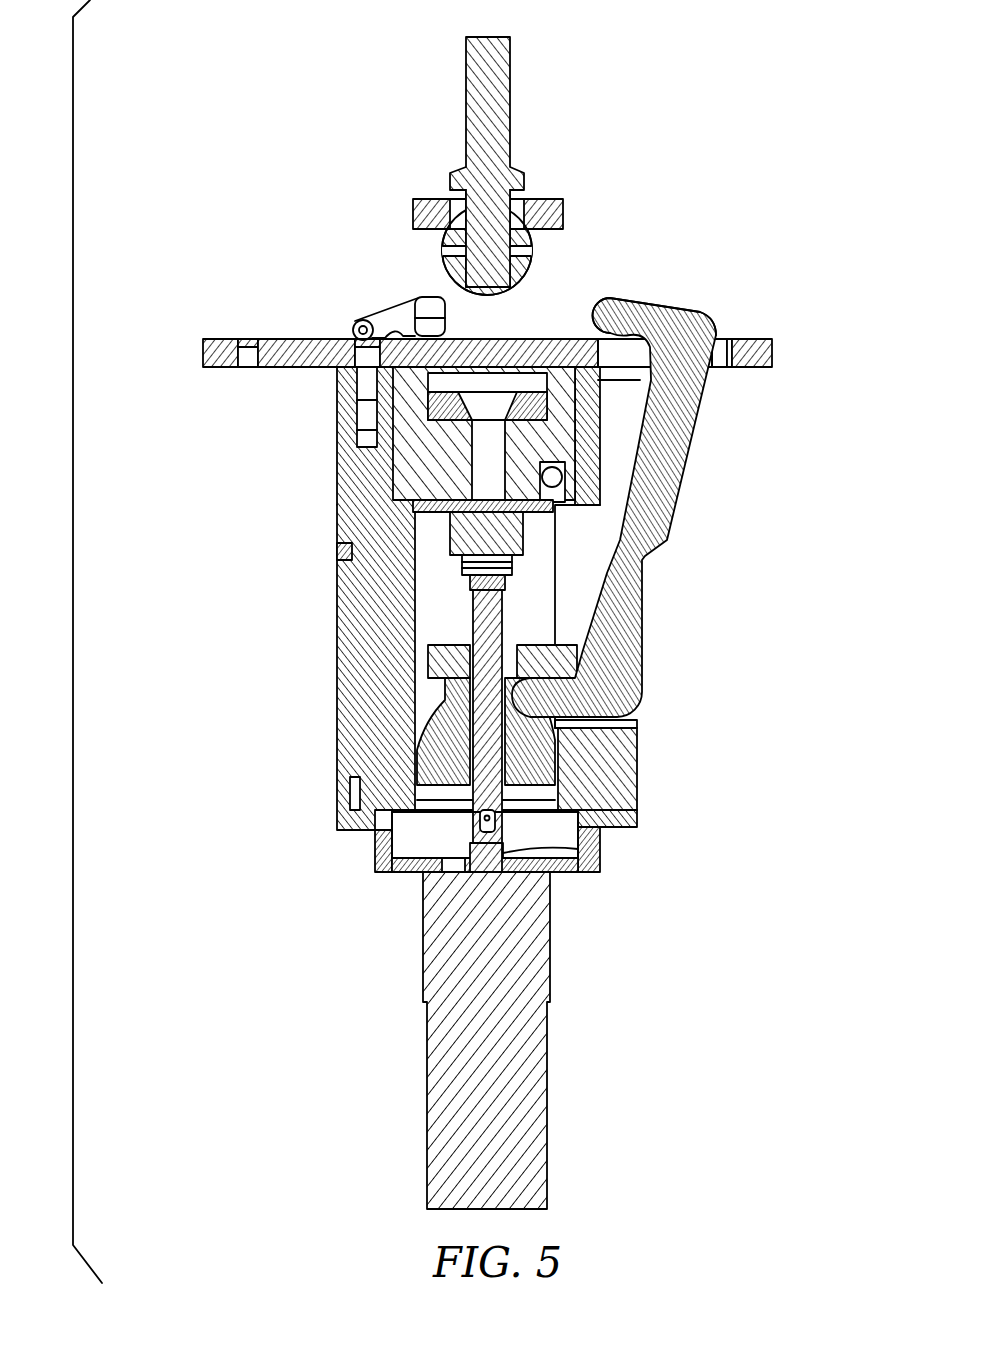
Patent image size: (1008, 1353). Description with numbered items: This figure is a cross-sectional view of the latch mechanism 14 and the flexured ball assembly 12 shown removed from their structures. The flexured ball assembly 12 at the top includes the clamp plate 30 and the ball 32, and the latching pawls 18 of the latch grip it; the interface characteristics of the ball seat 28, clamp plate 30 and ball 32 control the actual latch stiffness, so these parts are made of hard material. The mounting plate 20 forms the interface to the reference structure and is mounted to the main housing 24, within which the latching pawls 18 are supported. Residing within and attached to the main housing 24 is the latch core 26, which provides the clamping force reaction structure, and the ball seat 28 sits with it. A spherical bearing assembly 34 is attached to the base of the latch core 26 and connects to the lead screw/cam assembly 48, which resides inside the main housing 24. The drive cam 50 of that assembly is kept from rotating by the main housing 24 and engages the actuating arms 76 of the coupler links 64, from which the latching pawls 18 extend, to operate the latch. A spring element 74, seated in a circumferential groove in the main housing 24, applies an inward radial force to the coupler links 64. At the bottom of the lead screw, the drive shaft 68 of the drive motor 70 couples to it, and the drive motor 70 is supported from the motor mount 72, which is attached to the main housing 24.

The flexured ball assembly 12 is at (410, 33).
The latch mechanism 14 is at (183, 345).
The latching pawls 18 is at (606, 298).
The mounting plate 20 is at (772, 353).
The main housing 24 is at (337, 636).
The latch core 26 is at (382, 468).
The ball seat 28 is at (468, 395).
The clamp plate 30 is at (563, 213).
The ball 32 is at (527, 268).
The spherical bearing assembly 34 is at (548, 543).
The lead screw/cam assembly 48 is at (515, 607).
The drive cam 50 is at (575, 798).
The coupler links 64 is at (688, 453).
The drive shaft 68 is at (580, 853).
The drive motor 70 is at (423, 958).
The motor mount 72 is at (375, 843).
The spring element 74 is at (337, 548).
The actuating arms 76 is at (610, 723).